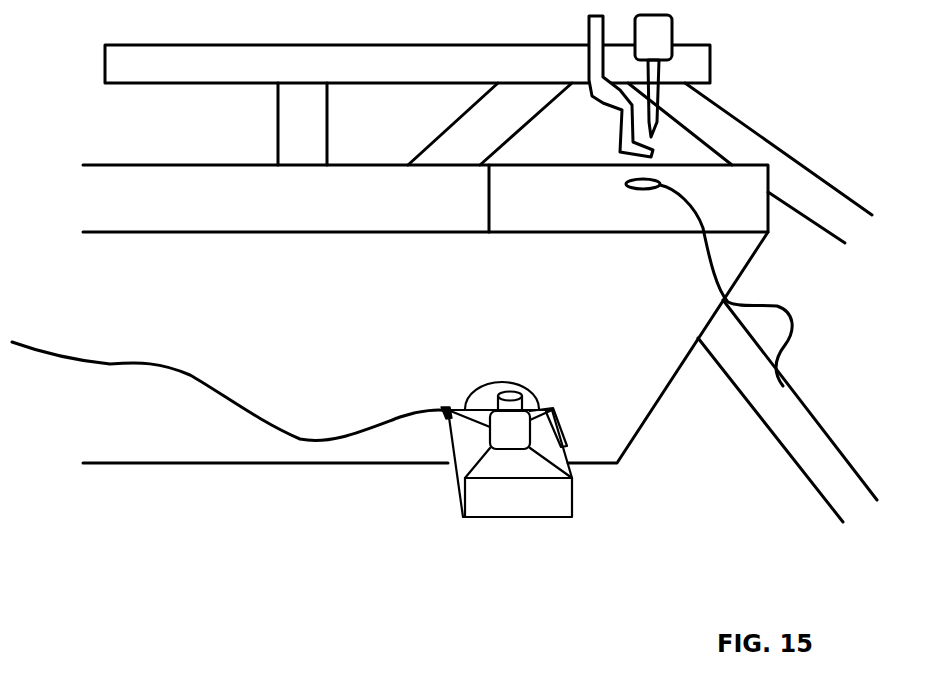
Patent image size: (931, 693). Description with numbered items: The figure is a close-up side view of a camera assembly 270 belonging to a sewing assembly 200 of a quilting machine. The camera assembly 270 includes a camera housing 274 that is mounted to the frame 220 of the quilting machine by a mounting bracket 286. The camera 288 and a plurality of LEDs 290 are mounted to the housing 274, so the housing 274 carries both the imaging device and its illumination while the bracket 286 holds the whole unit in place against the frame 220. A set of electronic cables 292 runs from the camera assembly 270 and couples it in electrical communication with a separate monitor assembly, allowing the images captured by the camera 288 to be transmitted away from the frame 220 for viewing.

The system 200 is at (213, 504).
The frame 220 is at (155, 165).
The camera assembly 270 is at (568, 432).
The camera housing 274 is at (447, 417).
The mounting bracket 286 is at (485, 397).
The camera 288 is at (518, 383).
The LEDs 290 is at (523, 463).
The electronic cables 292 is at (205, 388).